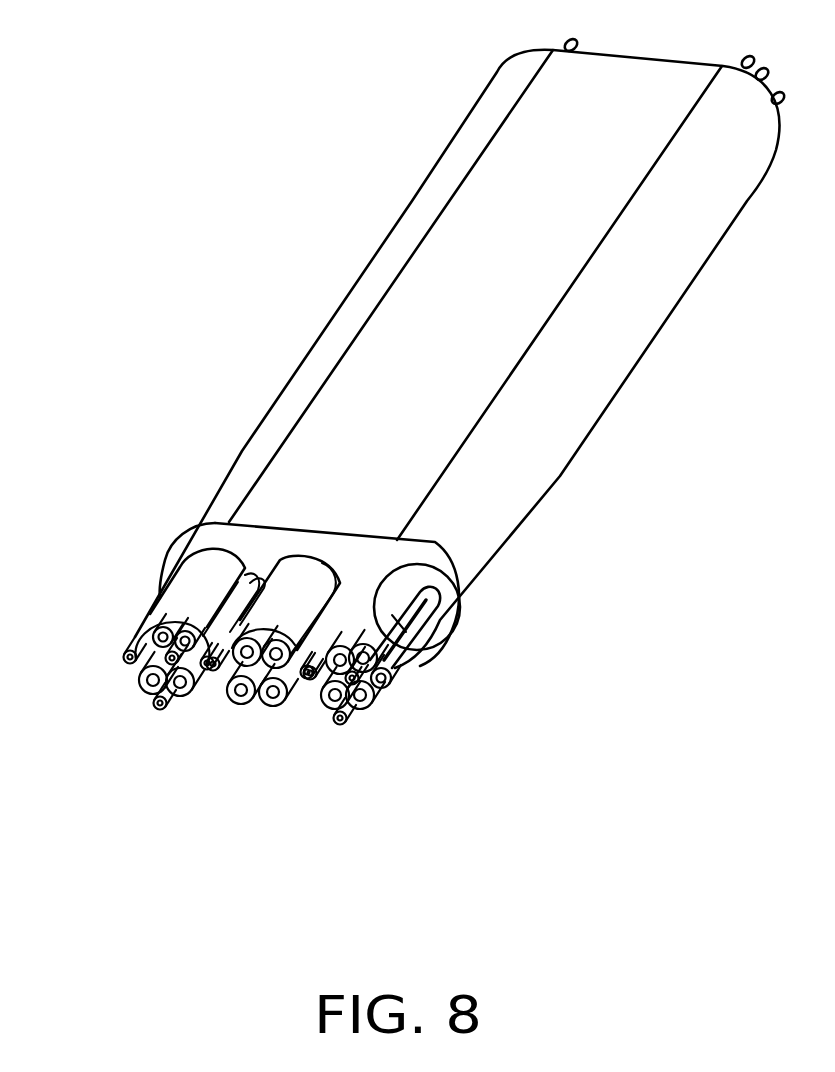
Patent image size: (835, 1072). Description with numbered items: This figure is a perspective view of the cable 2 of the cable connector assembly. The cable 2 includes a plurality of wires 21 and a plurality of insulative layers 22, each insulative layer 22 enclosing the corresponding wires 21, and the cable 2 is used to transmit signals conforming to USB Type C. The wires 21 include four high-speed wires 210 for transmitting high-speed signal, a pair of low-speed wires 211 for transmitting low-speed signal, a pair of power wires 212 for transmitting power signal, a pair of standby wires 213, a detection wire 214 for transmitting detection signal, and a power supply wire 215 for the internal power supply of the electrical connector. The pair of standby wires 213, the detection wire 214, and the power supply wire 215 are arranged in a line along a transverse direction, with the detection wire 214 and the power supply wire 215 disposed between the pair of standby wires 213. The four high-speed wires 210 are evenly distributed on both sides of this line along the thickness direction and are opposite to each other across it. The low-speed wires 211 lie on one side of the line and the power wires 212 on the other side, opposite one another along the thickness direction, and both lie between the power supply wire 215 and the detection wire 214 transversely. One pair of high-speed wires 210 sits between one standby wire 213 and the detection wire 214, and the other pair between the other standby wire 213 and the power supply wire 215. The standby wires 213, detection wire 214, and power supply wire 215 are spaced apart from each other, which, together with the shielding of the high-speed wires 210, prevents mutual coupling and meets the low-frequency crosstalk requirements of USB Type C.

The cable 2 is at (403, 428).
The insulative layers 22 is at (410, 323).
The wires 21 is at (225, 560).
The low-speed wires 211 is at (300, 570).
The high-speed wires 210 is at (180, 597).
The standby wires 213 is at (127, 653).
The power wires 212 is at (285, 703).
The detection wire 214 is at (215, 673).
The power supply wire 215 is at (314, 678).